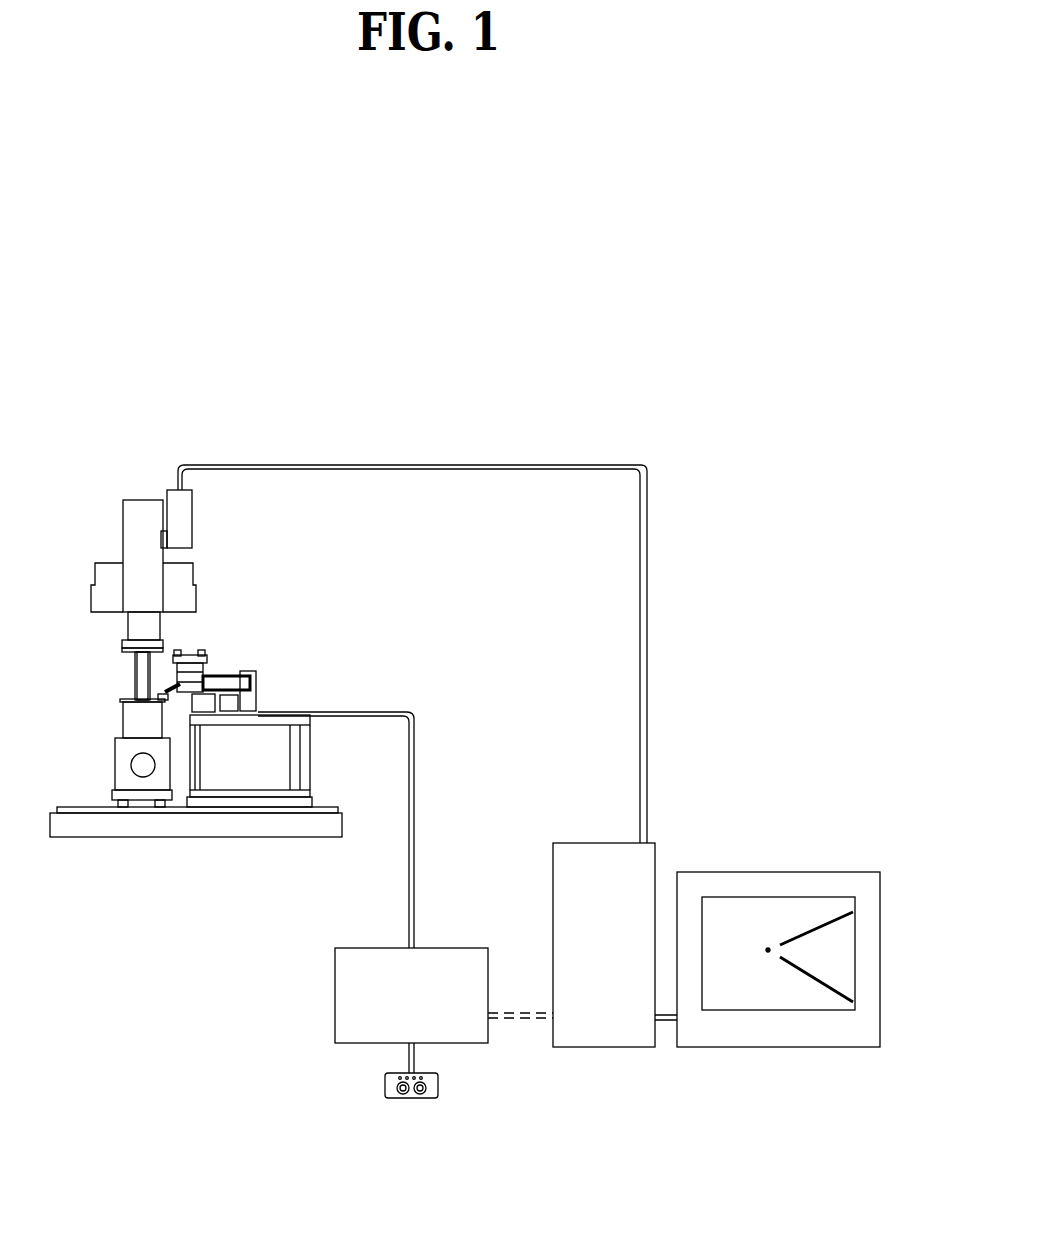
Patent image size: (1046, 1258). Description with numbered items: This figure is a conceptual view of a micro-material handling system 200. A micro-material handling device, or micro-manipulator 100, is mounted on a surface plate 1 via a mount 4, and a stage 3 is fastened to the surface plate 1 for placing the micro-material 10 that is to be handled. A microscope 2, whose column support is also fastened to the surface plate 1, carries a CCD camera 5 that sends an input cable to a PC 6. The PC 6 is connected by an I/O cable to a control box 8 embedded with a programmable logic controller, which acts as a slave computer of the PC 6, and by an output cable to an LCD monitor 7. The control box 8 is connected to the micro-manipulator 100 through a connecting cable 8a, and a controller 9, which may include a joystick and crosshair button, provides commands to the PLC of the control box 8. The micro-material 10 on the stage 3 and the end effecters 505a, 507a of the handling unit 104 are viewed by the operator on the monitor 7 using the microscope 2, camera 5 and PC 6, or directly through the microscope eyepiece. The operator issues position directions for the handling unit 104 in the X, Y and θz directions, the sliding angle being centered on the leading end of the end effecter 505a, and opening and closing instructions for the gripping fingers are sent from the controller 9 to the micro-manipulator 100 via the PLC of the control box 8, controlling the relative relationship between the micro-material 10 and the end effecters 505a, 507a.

The surface plate 1 is at (102, 832).
The microscope 2 is at (123, 525).
The stage 3 is at (115, 742).
The mount 4 is at (300, 758).
The camera 5 is at (192, 510).
The PC 6 is at (598, 1047).
The monitor 7 is at (798, 1047).
The control box 8 is at (335, 985).
The connecting cable 8a is at (415, 765).
The controller 9 is at (438, 1085).
The micro-material 10 is at (768, 943).
The micro-manipulator 100 is at (238, 660).
The handling unit 104 is at (143, 690).
The micro-material handling system 200 is at (447, 413).
The end effecter 505a is at (815, 926).
The end effecter 507a is at (818, 982).